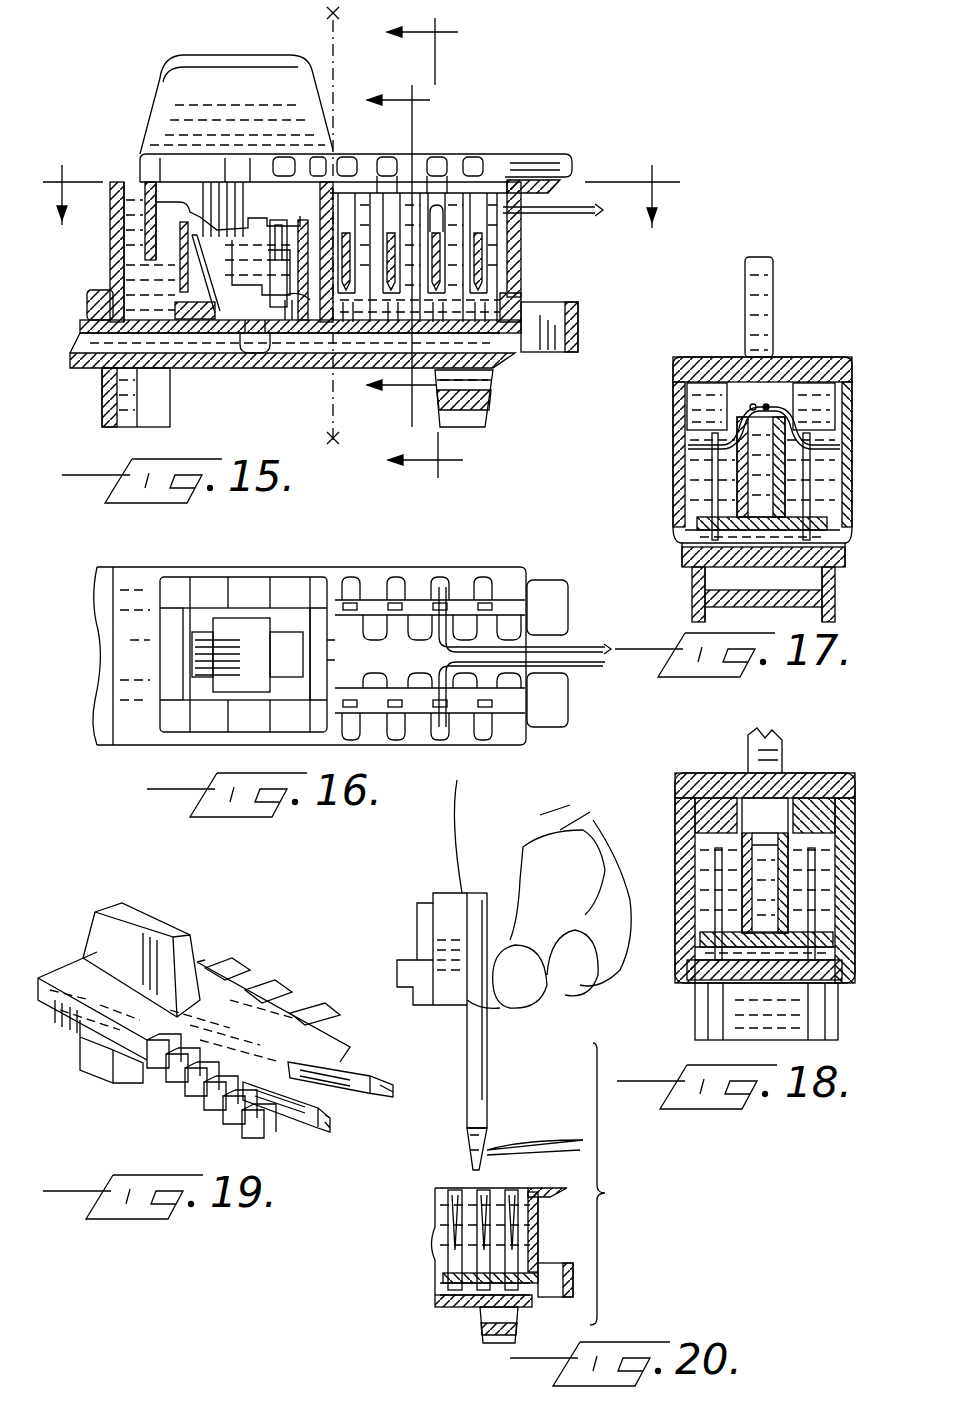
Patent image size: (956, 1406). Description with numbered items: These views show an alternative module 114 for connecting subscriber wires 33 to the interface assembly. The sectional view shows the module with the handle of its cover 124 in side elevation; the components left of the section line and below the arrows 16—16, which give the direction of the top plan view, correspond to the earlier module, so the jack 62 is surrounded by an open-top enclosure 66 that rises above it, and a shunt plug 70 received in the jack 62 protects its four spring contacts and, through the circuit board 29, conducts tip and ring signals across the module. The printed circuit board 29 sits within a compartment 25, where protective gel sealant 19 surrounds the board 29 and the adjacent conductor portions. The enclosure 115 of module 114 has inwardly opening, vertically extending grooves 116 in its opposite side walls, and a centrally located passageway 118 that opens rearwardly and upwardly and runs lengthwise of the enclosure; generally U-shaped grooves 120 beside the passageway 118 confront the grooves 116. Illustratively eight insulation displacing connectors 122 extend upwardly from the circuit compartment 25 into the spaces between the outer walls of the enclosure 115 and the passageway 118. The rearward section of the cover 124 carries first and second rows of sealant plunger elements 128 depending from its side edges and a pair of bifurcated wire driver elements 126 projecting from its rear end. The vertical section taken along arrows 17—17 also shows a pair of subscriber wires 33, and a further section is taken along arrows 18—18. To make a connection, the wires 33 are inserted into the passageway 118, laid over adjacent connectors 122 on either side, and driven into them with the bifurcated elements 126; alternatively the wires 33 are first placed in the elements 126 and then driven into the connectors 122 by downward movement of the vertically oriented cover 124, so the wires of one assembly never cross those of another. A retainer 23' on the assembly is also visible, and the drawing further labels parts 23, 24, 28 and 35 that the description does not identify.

In FIG. 15, the module 114 is at (272, 55).
In FIG. 20, the module 114 is at (605, 1193).
In FIG. 15, the cover 124 is at (465, 154).
In FIG. 17, the cover 124 is at (790, 357).
In FIG. 18, the cover 124 is at (800, 775).
In FIG. 19, the cover 124 is at (225, 985).
In FIG. 20, the cover 124 is at (487, 1060).
In FIG. 15, the bifurcated wire driver elements 126 is at (558, 155).
In FIG. 19, the bifurcated wire driver elements 126 is at (345, 1115).
In FIG. 20, the bifurcated wire driver elements 126 is at (490, 1143).
In FIG. 15, the sealant plunger elements 128 is at (403, 195).
In FIG. 17, the sealant plunger elements 128 is at (700, 395).
In FIG. 18, the sealant plunger elements 128 is at (700, 820).
In FIG. 19, the sealant plunger elements 128 is at (150, 1090).
In FIG. 15, the insulation displacing connectors 122 is at (345, 235).
In FIG. 16, the insulation displacing connectors 122 is at (400, 605).
In FIG. 17, the insulation displacing connectors 122 is at (825, 495).
In FIG. 18, the insulation displacing connectors 122 is at (712, 870).
In FIG. 20, the insulation displacing connectors 122 is at (460, 1235).
In FIG. 16, the grooves 116 is at (360, 582).
In FIG. 16, the U-shaped grooves 120 is at (465, 625).
In FIG. 16, the passageway 118 is at (355, 650).
In FIG. 17, the passageway 118 is at (737, 455).
In FIG. 18, the passageway 118 is at (758, 798).
In FIG. 15, the enclosure 115 is at (521, 272).
In FIG. 16, the enclosure 115 is at (335, 580).
In FIG. 17, the enclosure 115 is at (685, 490).
In FIG. 18, the enclosure 115 is at (680, 883).
In FIG. 20, the enclosure 115 is at (538, 1240).
In FIG. 15, the jack 62 is at (120, 248).
In FIG. 16, the jack 62 is at (207, 600).
In FIG. 15, the open top enclosure 66 is at (175, 190).
In FIG. 15, the sealant material 19 is at (137, 273).
In FIG. 17, the sealant material 19 is at (820, 465).
In FIG. 18, the sealant material 19 is at (825, 900).
In FIG. 15, the printed circuit board 29 is at (88, 298).
In FIG. 17, the printed circuit board 29 is at (697, 530).
In FIG. 18, the printed circuit board 29 is at (840, 947).
In FIG. 20, the printed circuit board 29 is at (443, 1283).
In FIG. 15, the compartment 25 is at (188, 370).
In FIG. 17, the compartment 25 is at (845, 555).
In FIG. 18, the compartment 25 is at (837, 980).
In FIG. 20, the compartment 25 is at (465, 1308).
In FIG. 15, the left mounting foot 24 is at (102, 418).
In FIG. 18, the left mounting foot 24 is at (695, 1012).
In FIG. 15, the right mounting foot 23 is at (496, 406).
In FIG. 17, the right mounting foot 23 is at (793, 594).
In FIG. 15, the retainer 23' is at (500, 389).
In FIG. 15, the side block 28 is at (580, 325).
In FIG. 15, the subscriber wires 33 is at (598, 212).
In FIG. 16, the subscriber wires 33 is at (586, 655).
In FIG. 17, the subscriber wires 33 is at (688, 447).
In FIG. 20, the subscriber wires 33 is at (580, 1133).
In FIG. 15, the spring 35 is at (307, 345).
In FIG. 15, the shunt plug 70 is at (255, 355).
In FIG. 19, the shunt plug 70 is at (110, 1080).
In FIG. 20, the shunt plug 70 is at (410, 945).
In FIG. 15, the arrows 16— 16 is at (361, 181).
In FIG. 15, the arrows 17— 17 is at (440, 250).
In FIG. 15, the arrows 18— 18 is at (402, 248).